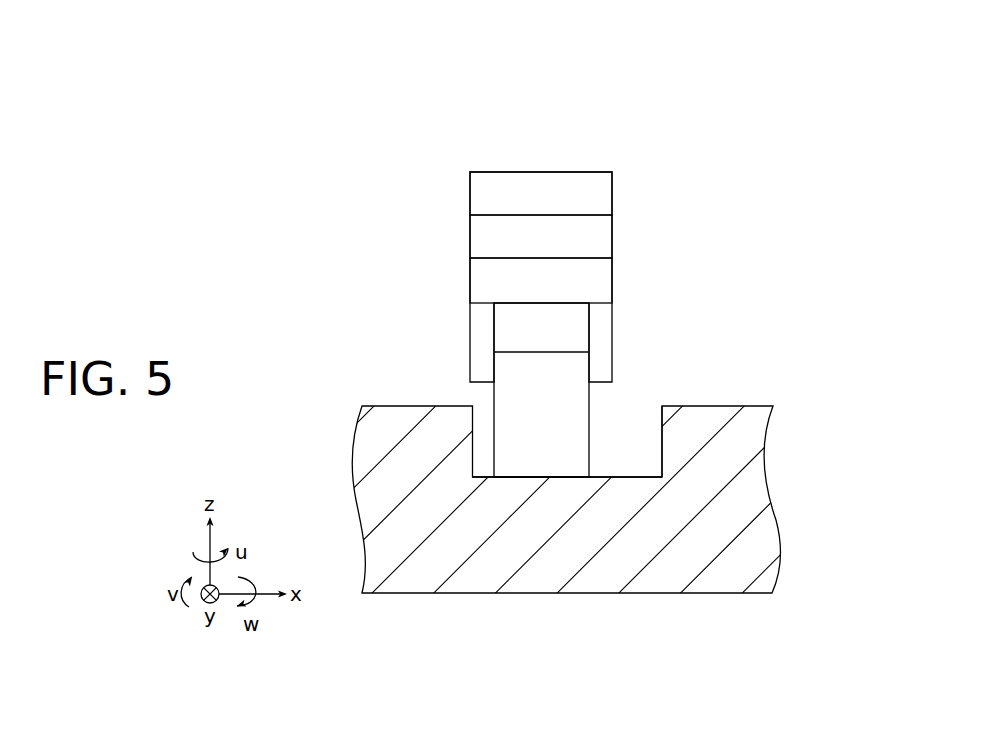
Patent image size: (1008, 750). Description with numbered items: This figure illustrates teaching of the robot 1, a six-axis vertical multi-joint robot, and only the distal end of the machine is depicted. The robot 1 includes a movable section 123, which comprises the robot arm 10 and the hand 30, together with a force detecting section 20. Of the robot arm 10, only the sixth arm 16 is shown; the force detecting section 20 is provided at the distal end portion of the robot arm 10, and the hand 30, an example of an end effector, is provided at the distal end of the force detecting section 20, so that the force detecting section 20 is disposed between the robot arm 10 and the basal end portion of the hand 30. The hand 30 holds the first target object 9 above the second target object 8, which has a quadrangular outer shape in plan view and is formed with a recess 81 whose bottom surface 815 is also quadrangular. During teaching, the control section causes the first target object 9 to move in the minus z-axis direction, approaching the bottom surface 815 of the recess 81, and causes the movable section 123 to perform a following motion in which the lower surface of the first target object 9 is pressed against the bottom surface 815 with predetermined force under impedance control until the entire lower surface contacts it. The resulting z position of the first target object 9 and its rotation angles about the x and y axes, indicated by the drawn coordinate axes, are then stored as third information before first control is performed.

The robot 1 is at (634, 58).
The movable section 123 is at (651, 92).
The robot arm 10 is at (645, 136).
The sixth arm 16 is at (595, 193).
The force detecting section 20 is at (624, 237).
The hand 30 is at (624, 280).
The first target object 9 is at (513, 440).
The second target object 8 is at (718, 607).
The bottom surface 815 is at (623, 474).
The recess 81 is at (663, 442).